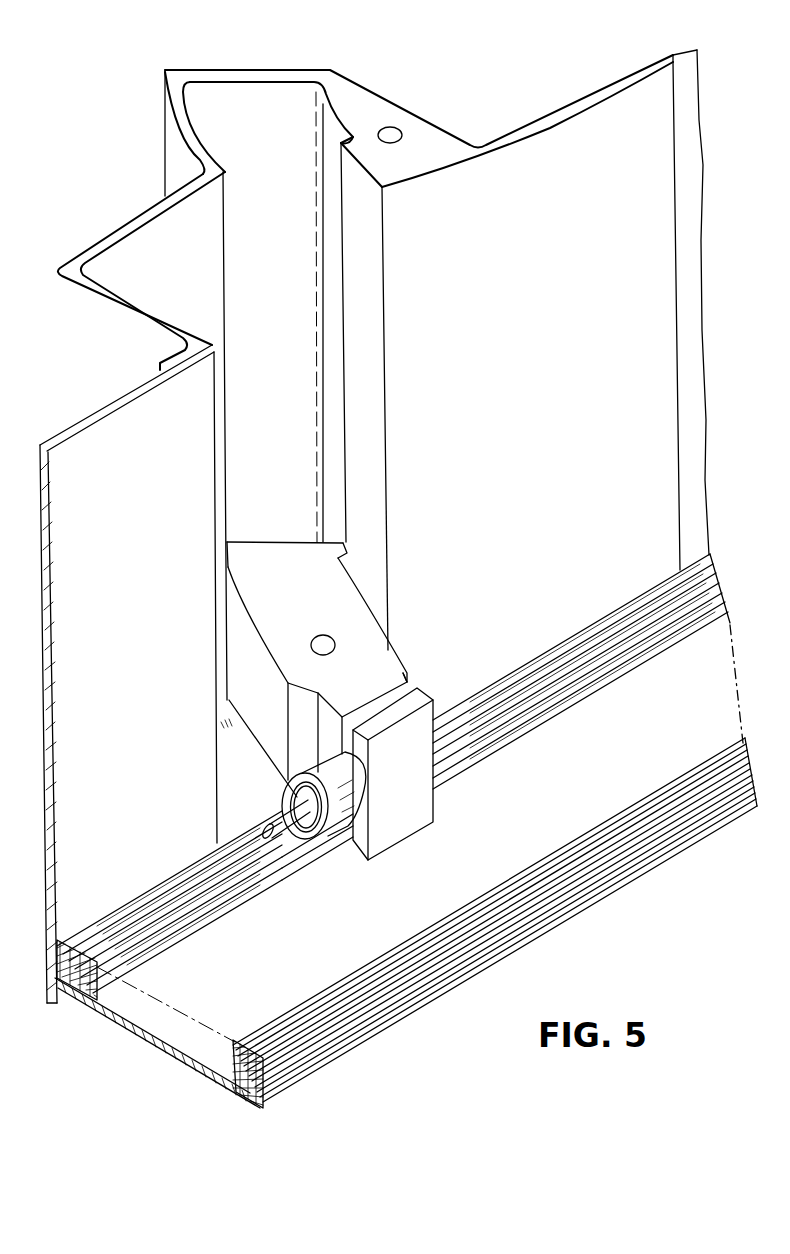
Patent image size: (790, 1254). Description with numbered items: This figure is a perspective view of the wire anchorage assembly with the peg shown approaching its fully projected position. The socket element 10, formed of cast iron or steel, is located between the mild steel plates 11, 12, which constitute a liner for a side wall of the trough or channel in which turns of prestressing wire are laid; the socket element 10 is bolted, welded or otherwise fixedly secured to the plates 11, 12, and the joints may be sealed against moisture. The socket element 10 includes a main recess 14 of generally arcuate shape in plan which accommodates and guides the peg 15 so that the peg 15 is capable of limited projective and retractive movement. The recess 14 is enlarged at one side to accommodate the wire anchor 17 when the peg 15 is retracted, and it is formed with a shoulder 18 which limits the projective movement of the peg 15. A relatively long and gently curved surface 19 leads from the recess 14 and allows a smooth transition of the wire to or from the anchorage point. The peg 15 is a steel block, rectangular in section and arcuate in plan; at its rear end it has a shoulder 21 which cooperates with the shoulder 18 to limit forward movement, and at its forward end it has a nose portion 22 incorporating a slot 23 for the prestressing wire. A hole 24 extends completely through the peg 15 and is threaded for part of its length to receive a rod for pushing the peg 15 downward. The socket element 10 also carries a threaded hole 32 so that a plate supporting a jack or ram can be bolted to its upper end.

The socket element 10 is at (365, 76).
The plate 11 is at (108, 423).
The plate 12 is at (687, 63).
The main recess 14 is at (278, 88).
The peg 15 is at (250, 580).
The wire anchor 17 is at (297, 792).
The shoulder 18 is at (357, 137).
The curved surface 19 is at (552, 138).
The shoulder 21 is at (347, 545).
The nose portion 22 is at (420, 697).
The slot 23 is at (409, 683).
The hole 24 is at (319, 634).
The threaded hole 32 is at (403, 133).